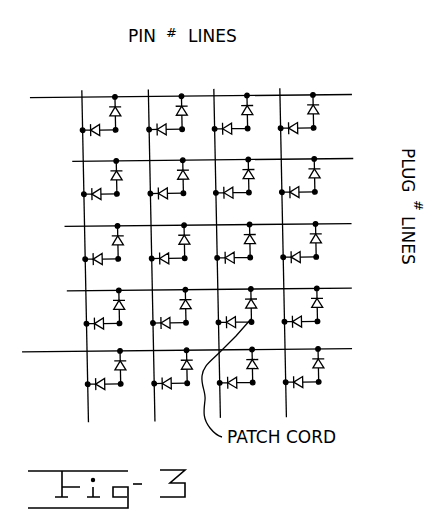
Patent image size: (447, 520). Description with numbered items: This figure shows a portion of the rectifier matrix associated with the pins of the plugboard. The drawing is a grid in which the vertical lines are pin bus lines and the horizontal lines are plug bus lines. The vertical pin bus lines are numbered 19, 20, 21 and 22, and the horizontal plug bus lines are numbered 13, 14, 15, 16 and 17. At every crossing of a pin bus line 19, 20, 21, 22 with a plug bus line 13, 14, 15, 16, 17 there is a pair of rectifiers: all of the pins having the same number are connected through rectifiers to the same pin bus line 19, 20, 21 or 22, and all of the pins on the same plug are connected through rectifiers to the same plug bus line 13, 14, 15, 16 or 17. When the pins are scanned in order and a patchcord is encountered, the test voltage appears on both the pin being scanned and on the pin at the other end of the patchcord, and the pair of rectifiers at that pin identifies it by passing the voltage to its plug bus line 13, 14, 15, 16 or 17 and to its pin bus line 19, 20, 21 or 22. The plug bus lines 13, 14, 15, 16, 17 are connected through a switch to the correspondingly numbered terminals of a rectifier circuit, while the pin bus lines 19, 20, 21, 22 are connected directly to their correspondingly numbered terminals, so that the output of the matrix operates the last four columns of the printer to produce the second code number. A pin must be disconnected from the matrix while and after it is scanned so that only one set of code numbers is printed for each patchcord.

The plug line 13 is at (206, 92).
The plug line 14 is at (226, 152).
The plug line 15 is at (223, 217).
The plug line 16 is at (224, 281).
The plug line 17 is at (202, 346).
The pin line 19 is at (83, 243).
The pin line 20 is at (150, 243).
The pin line 21 is at (213, 241).
The pin line 22 is at (278, 240).